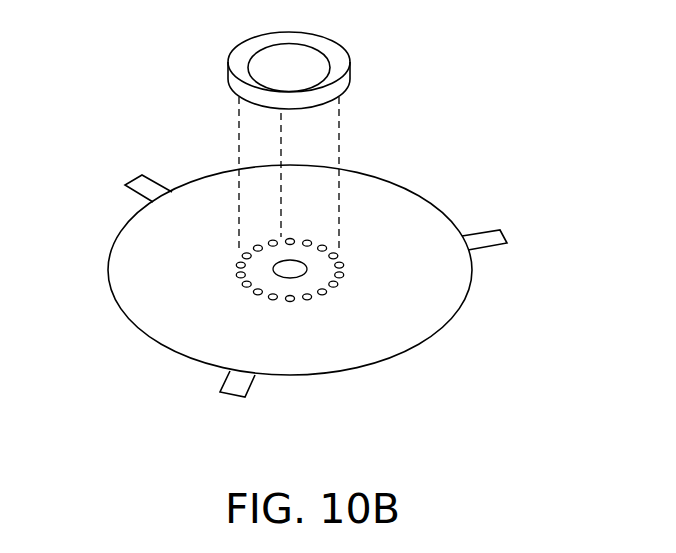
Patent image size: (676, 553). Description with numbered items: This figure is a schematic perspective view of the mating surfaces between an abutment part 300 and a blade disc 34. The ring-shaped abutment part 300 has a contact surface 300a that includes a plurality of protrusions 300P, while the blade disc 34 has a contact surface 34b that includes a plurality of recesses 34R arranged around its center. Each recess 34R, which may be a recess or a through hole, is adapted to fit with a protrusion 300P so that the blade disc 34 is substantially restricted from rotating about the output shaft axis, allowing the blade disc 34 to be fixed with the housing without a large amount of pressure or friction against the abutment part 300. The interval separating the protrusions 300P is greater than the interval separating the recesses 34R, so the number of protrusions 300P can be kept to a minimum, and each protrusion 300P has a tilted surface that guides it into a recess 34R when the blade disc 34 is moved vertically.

The abutment part 300 is at (240, 50).
The contact surface of the abutment part 300a is at (350, 85).
The protrusion 300P is at (243, 96).
The blade disc 34 is at (140, 275).
The recess 34R is at (342, 262).
The contact surface of the blade disc 34b is at (345, 273).